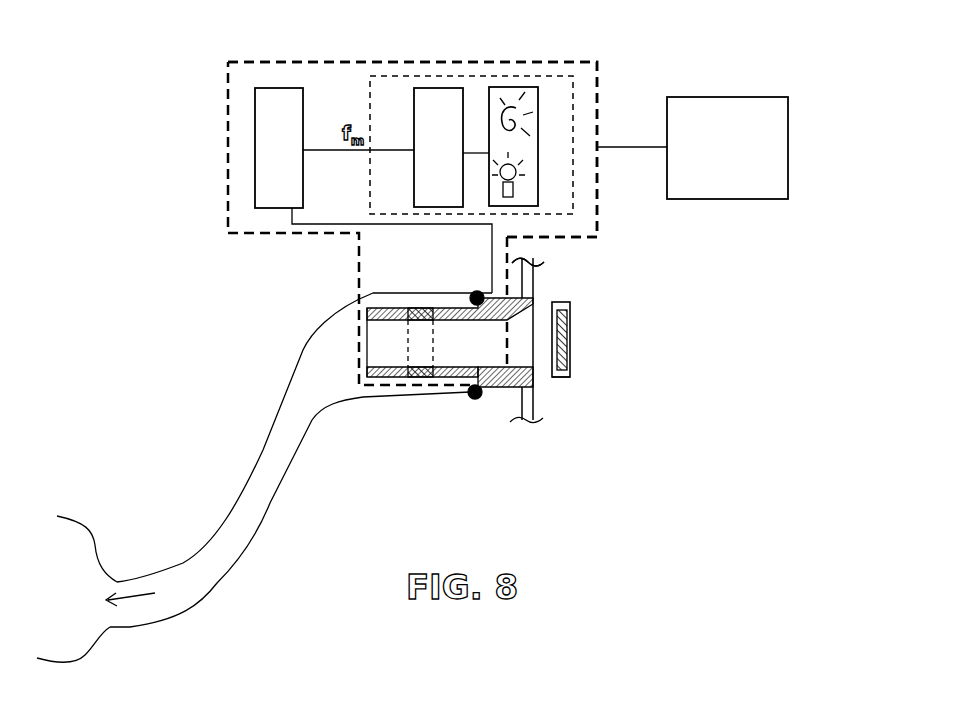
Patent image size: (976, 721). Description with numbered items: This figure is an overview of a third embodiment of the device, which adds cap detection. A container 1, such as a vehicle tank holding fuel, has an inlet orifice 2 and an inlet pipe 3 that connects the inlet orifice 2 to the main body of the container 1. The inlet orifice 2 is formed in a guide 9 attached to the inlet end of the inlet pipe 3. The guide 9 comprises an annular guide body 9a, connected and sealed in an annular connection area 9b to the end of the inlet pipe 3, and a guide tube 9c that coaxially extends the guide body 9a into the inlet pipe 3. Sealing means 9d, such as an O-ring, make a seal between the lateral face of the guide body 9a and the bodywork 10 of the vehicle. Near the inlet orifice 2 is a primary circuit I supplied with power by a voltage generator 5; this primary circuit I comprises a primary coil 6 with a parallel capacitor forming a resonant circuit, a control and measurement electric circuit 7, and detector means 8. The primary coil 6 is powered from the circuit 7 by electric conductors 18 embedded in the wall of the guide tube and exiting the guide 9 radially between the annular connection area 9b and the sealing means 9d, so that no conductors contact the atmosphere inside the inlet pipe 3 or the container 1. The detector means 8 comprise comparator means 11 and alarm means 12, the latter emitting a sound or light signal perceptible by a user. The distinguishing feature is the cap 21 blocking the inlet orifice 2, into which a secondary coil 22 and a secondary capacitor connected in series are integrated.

The container 1 is at (99, 641).
The inlet orifice 2 is at (554, 381).
The inlet pipe 3 is at (260, 483).
The voltage generator 5 is at (777, 145).
The primary coil 6 is at (425, 390).
The control and measurement electric circuit 7 is at (283, 112).
The detector means 8 is at (368, 90).
The guide 9 is at (521, 400).
The annular guide body 9a is at (508, 387).
The annular connection area 9b is at (462, 393).
The guide tube 9c is at (393, 380).
The sealing means 9d is at (528, 296).
The bodywork 10 is at (531, 278).
The comparator means 11 is at (440, 103).
The alarm means 12 is at (527, 183).
The electric conductors 18 is at (378, 226).
The cap 21 is at (580, 352).
The secondary coil 22 is at (567, 318).
The primary circuit I is at (228, 235).